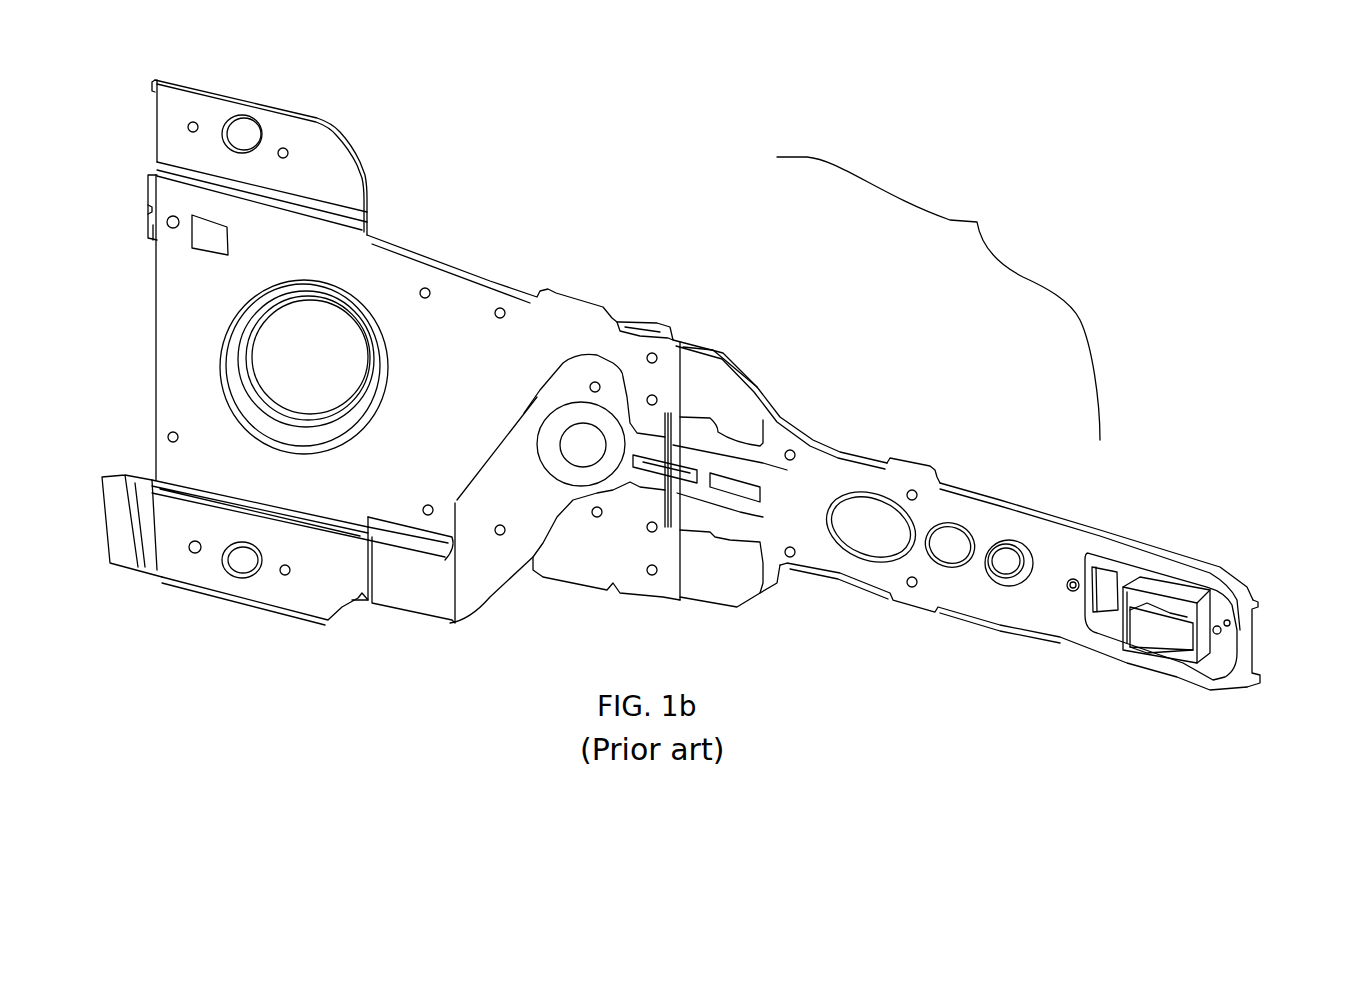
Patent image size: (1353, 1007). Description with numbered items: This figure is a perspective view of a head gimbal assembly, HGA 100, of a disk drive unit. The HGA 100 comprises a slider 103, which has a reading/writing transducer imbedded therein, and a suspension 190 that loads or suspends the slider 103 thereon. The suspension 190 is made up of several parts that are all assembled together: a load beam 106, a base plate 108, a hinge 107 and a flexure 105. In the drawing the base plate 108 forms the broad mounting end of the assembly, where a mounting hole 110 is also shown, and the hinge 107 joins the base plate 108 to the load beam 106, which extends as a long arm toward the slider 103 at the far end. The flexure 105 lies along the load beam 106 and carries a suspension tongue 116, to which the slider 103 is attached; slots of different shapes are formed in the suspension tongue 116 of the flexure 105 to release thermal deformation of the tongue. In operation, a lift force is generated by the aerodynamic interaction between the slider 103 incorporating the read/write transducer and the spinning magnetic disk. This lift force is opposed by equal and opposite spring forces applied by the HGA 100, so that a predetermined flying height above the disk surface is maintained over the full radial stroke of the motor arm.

The HGA 100 is at (397, 71).
The slider 103 is at (1142, 627).
The flexure 105 is at (987, 533).
The load beam 106 is at (777, 422).
The hinge 107 is at (703, 392).
The base plate 108 is at (652, 320).
The mounting hole 110 is at (297, 400).
The suspension tongue 116 is at (1220, 640).
The suspension 190 is at (938, 298).